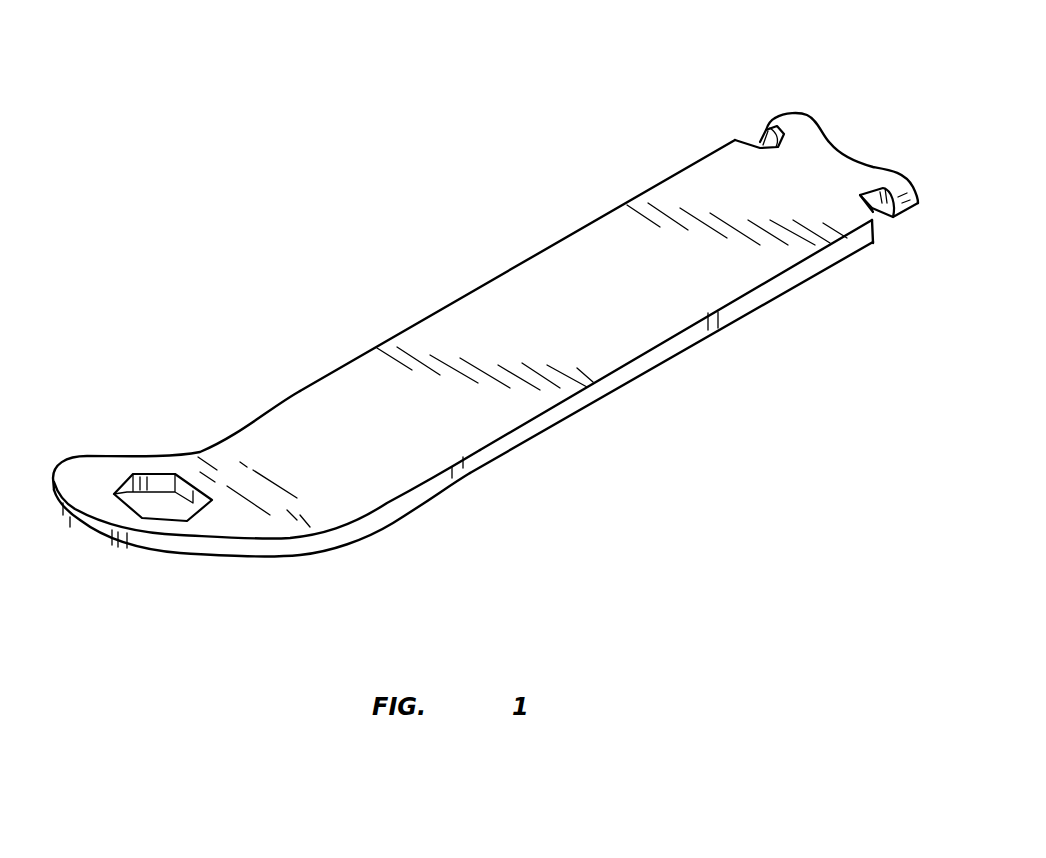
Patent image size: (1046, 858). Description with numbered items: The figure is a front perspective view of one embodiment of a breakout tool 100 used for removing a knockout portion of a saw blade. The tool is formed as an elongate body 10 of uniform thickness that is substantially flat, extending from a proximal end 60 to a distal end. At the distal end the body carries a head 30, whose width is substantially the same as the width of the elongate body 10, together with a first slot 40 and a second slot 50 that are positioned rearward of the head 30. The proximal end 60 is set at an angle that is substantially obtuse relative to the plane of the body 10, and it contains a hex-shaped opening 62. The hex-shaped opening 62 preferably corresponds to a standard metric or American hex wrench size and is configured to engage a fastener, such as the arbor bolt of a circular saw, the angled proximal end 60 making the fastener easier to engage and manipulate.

The breakout tool 100 is at (727, 66).
The elongate body 10 is at (537, 290).
The head 30 is at (807, 120).
The first slot 40 is at (878, 209).
The second slot 50 is at (763, 132).
The proximal end 60 is at (177, 543).
The hex-shaped opening 62 is at (160, 483).